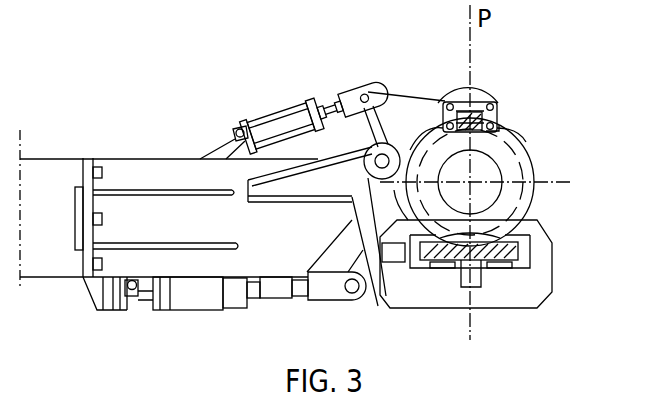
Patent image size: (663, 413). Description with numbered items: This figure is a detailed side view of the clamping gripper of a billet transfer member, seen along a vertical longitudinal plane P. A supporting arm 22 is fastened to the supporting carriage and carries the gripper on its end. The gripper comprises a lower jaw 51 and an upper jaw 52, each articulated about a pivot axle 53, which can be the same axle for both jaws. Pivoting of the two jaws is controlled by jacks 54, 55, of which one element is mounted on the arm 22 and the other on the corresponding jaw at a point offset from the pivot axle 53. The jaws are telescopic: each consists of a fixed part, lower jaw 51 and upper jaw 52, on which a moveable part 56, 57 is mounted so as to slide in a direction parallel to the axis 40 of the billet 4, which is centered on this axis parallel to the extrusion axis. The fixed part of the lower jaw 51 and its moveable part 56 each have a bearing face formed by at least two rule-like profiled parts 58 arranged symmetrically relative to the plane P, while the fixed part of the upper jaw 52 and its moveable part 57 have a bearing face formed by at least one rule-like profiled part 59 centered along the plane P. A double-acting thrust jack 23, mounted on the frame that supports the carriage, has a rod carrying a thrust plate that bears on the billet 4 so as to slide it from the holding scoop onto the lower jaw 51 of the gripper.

The billet 4 is at (423, 138).
The supporting arm 22 is at (152, 174).
The double-acting thrust jack 23 is at (85, 158).
The axis 40 is at (480, 178).
The lower jaw 51 is at (528, 286).
The upper jaw 52 is at (496, 103).
The pivot axle 53 is at (384, 146).
The jack 54 is at (200, 292).
The jack 55 is at (276, 120).
The moveable part of lower jaw 56 is at (549, 248).
The moveable part of upper jaw 57 is at (504, 112).
The rule-like profiled parts 58 is at (520, 203).
The rule-like profiled part 59 is at (500, 125).